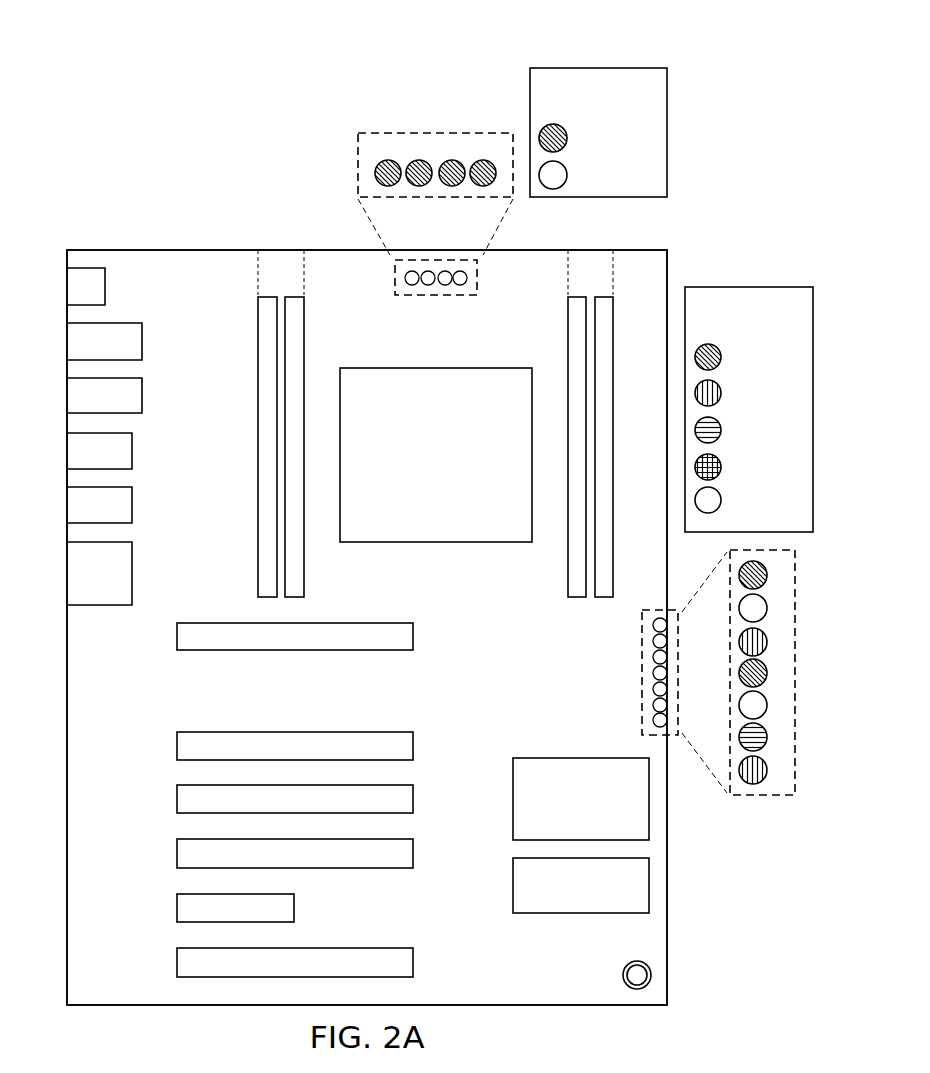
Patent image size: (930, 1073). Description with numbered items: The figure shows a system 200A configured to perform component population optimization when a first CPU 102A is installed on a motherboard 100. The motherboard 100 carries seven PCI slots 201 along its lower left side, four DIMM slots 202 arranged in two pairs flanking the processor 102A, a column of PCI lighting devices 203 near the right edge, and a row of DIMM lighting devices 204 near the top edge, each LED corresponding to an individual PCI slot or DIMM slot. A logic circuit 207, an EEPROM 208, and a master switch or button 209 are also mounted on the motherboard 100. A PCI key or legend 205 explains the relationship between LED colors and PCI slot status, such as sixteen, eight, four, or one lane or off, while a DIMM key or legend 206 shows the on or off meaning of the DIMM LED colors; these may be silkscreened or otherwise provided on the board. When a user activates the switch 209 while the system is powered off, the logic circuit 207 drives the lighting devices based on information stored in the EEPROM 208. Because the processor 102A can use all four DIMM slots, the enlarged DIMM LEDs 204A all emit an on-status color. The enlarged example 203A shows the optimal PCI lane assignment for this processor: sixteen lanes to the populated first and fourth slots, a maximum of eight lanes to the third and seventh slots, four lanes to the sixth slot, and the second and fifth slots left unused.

The system 200A is at (212, 108).
The motherboard 100 is at (178, 436).
The first CPU 102A is at (410, 482).
The PCI slots 201 is at (156, 622).
The DIMM slots 202 is at (258, 242).
The PCI lighting devices 203 is at (637, 686).
The example PCI slot configuration 203A is at (764, 802).
The DIMM lighting devices 204 is at (422, 301).
The DIMM LEDs 204A is at (421, 127).
The PCI key or legend 205 is at (748, 286).
The DIMM key or legend 206 is at (599, 67).
The logic circuit 207 is at (512, 800).
The EEPROM 208 is at (512, 885).
The master switch or button 209 is at (624, 972).